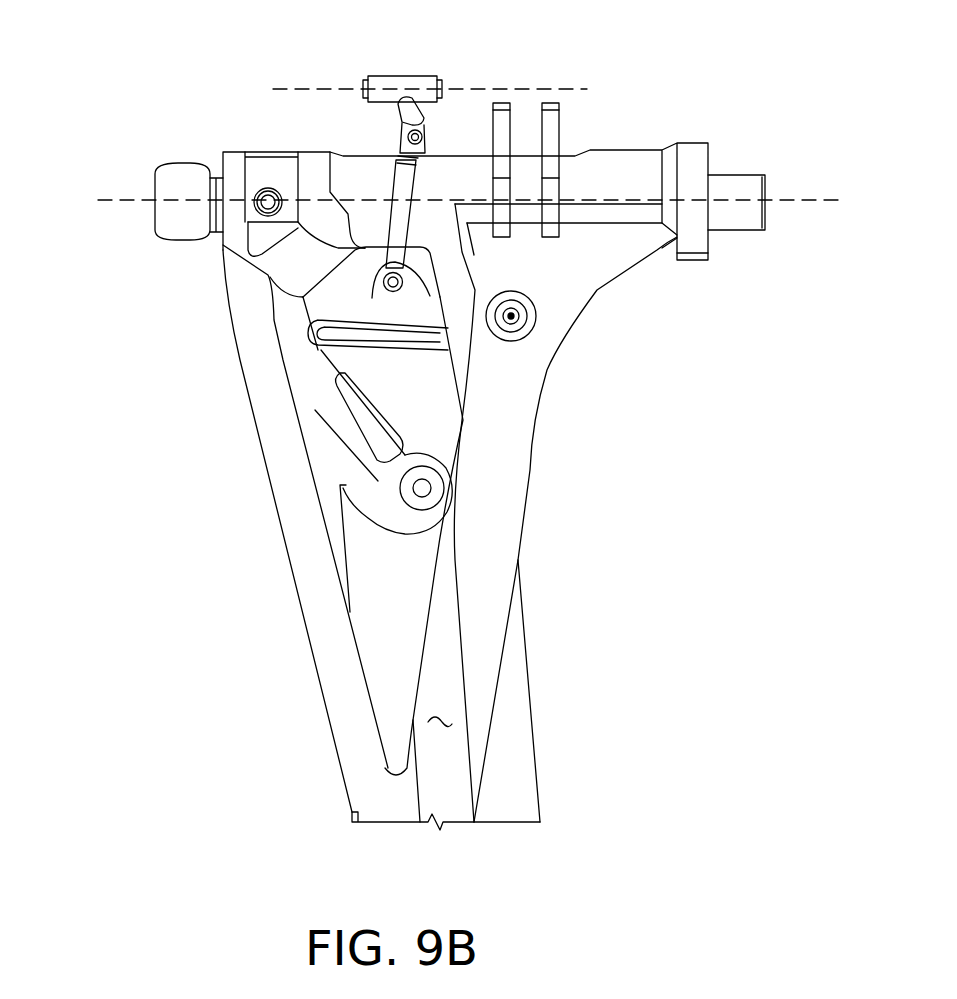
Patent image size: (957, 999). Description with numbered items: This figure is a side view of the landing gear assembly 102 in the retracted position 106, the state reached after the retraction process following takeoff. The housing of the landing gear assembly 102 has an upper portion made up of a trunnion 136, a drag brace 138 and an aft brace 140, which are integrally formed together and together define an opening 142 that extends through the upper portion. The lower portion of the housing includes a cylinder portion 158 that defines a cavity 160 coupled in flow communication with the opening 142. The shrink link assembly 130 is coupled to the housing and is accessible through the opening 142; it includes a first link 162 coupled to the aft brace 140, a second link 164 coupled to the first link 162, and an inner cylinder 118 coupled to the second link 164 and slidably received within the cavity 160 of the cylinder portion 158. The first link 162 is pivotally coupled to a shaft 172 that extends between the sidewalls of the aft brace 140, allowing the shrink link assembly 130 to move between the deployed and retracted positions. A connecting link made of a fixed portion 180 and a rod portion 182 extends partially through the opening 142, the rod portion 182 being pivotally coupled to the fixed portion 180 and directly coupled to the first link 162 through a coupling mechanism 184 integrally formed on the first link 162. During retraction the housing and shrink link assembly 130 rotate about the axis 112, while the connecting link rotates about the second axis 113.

The landing gear assembly 102 is at (130, 116).
The retracted position 106 is at (603, 362).
The axis 112 is at (798, 200).
The second axis 113 is at (536, 89).
The inner cylinder 118 is at (433, 462).
The shrink link assembly 130 is at (378, 492).
The trunnion 136 is at (598, 152).
The drag brace 138 is at (282, 492).
The aft brace 140 is at (503, 462).
The opening 142 is at (347, 363).
The cylinder portion 158 is at (530, 801).
The cavity 160 is at (448, 708).
The first link 162 is at (368, 352).
The second link 164 is at (348, 402).
The shaft 172 is at (527, 318).
The fixed portion 180 is at (420, 76).
The rod portion 182 is at (425, 152).
The coupling mechanism 184 is at (383, 297).